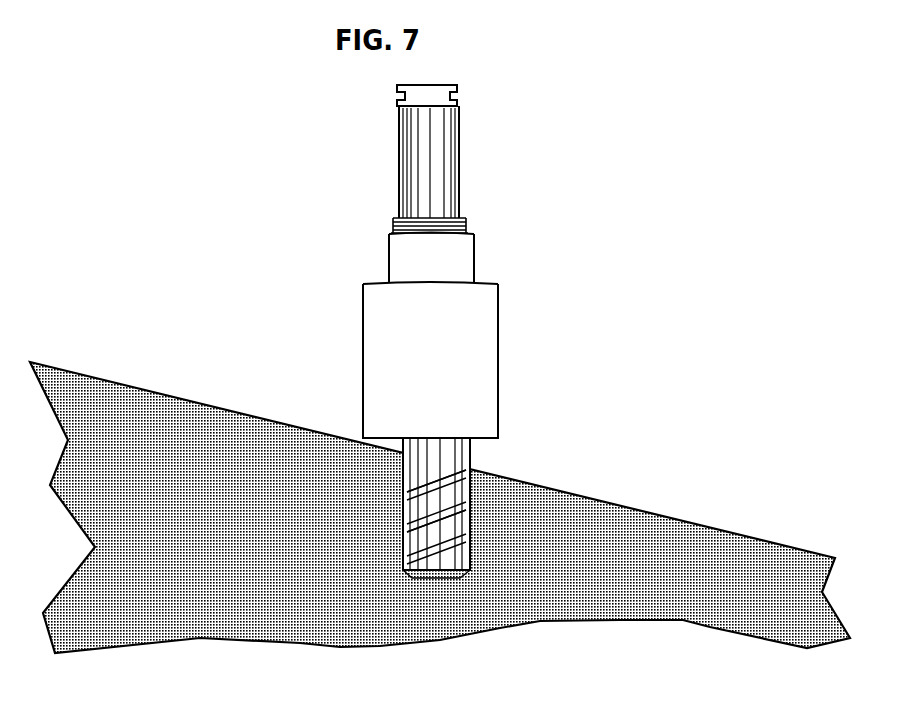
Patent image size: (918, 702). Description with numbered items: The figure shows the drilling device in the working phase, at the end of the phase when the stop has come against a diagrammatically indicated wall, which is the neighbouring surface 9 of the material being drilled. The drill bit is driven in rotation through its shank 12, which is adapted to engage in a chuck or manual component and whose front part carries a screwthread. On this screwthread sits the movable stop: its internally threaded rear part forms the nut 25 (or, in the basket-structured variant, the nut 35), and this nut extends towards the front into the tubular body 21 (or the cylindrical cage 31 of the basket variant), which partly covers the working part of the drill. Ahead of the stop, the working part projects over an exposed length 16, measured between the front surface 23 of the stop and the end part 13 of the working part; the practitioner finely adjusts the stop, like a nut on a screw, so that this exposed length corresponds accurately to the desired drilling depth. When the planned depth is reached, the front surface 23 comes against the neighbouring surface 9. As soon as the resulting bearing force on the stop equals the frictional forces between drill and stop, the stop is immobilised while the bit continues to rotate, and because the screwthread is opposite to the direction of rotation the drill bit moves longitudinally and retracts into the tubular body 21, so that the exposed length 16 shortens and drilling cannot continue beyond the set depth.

The neighbouring surface 9 is at (113, 382).
The shank 12 is at (437, 178).
The end part of the working part 13 is at (443, 575).
The exposed length of the working part 16 is at (443, 528).
The tubular body 21 is at (455, 359).
The cylindrical cage 31 is at (430, 361).
The front surface of the stop 23 is at (500, 440).
The nut 25 is at (480, 252).
The nut 35 is at (431, 258).